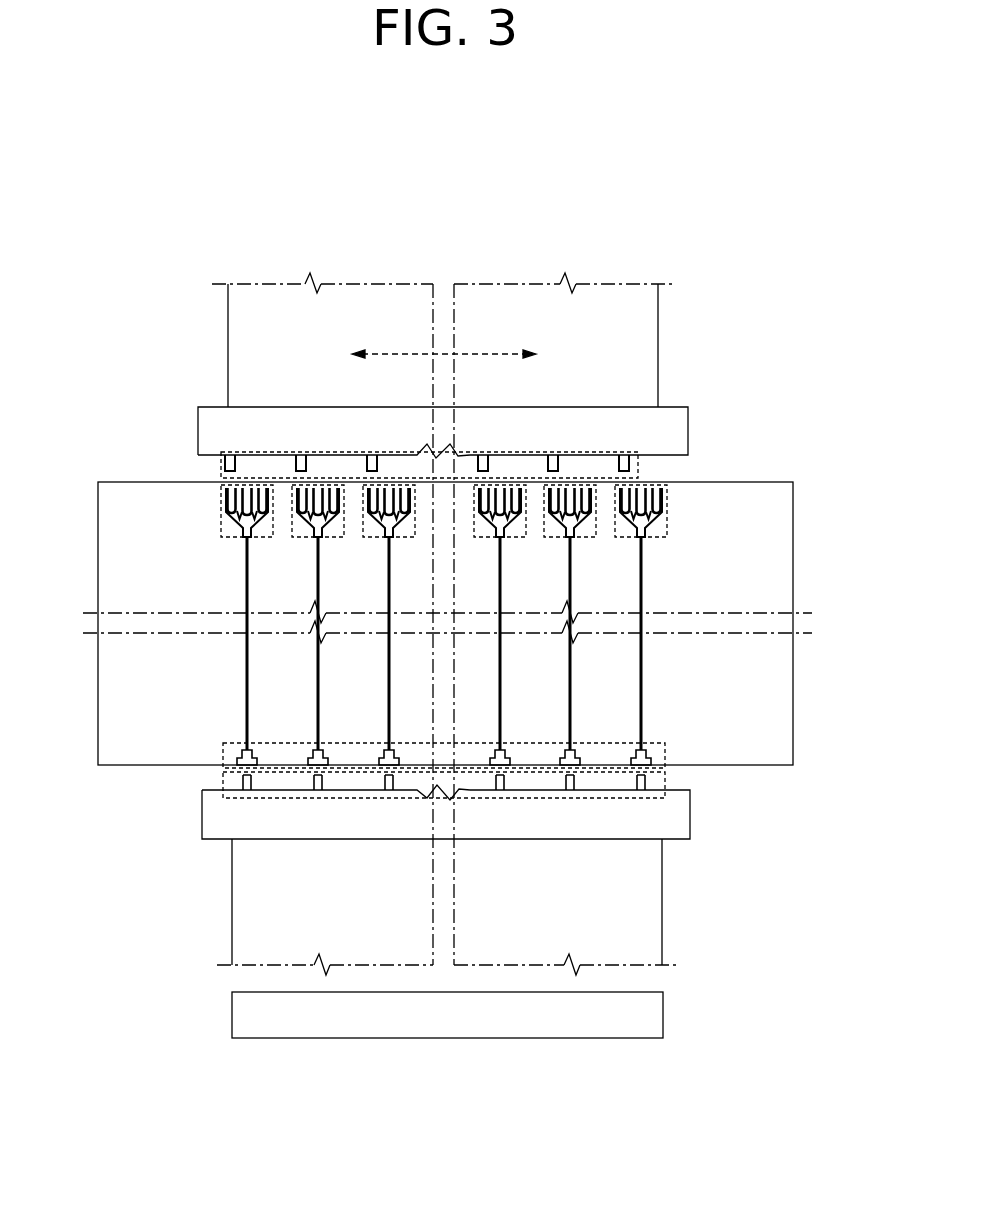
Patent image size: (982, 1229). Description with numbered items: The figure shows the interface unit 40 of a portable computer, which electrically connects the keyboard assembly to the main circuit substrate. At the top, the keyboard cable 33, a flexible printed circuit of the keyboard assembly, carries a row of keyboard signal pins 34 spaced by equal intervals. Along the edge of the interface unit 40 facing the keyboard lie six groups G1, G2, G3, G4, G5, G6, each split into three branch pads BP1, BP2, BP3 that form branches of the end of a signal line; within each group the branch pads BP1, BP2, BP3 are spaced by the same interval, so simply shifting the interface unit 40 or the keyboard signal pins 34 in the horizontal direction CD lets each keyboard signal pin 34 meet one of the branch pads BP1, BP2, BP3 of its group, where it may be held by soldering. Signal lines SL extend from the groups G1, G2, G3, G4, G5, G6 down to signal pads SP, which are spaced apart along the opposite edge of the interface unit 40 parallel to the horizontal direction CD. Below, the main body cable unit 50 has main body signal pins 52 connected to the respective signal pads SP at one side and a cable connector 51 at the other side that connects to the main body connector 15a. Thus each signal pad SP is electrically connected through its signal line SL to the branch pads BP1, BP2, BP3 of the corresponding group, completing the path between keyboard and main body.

The keyboard cable 33 is at (228, 345).
The keyboard signal pins 34 is at (218, 468).
The branch pad BP3 is at (632, 471).
The branch pad BP2 is at (630, 481).
The branch pad BP1 is at (660, 494).
The group G1 is at (629, 538).
The group G2 is at (558, 538).
The group G3 is at (488, 538).
The group G4 is at (377, 538).
The group G5 is at (306, 538).
The group G6 is at (235, 538).
The interface unit 40 is at (98, 702).
The signal lines SL is at (645, 688).
The signal pads SP is at (667, 752).
The main body signal pins 52 is at (667, 780).
The cable connector 51 is at (202, 817).
The main body cable unit 50 is at (714, 915).
The main body connector 15a is at (232, 1017).
The horizontal direction CD is at (461, 356).